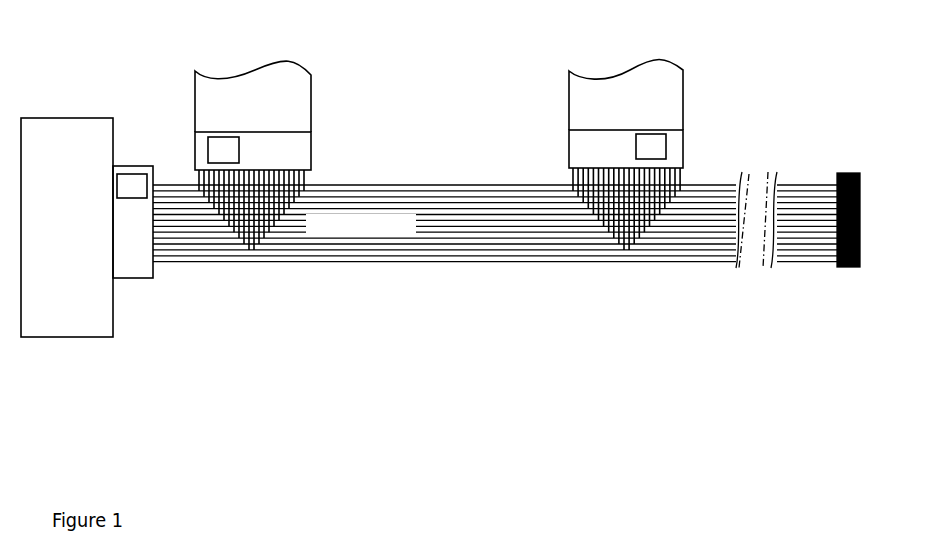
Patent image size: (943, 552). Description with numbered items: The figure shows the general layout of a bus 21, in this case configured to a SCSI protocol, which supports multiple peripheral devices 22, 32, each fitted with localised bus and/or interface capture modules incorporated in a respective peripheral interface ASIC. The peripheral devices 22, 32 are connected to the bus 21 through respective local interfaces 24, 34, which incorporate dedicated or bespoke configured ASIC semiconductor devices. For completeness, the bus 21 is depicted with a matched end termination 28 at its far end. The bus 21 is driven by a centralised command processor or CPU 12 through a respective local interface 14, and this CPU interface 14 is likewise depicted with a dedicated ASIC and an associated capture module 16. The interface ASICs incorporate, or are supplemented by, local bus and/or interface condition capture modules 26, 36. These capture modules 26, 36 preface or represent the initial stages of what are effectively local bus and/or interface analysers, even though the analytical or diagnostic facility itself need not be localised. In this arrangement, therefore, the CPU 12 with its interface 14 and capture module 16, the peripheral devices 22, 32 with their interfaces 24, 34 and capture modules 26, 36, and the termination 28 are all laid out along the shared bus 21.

The CPU 12 is at (77, 273).
The local interface 14 is at (144, 248).
The capture module 16 is at (132, 186).
The bus 21 is at (332, 243).
The peripheral device 22 is at (254, 120).
The local interface 24 is at (278, 160).
The capture module 26 is at (223, 150).
The matched end termination 28 is at (858, 267).
The peripheral device 32 is at (503, 24).
The local interface 34 is at (515, 65).
The capture module 36 is at (651, 146).